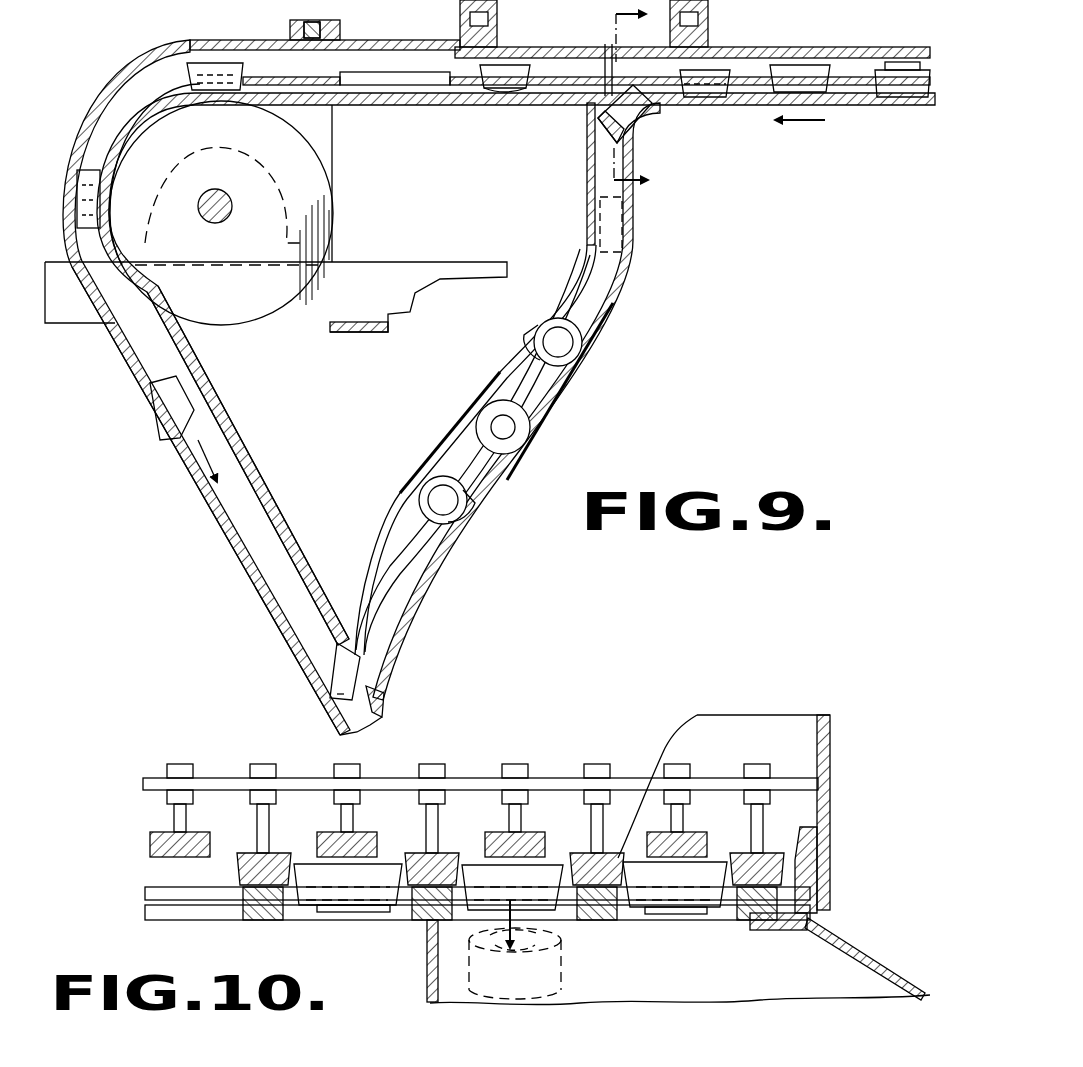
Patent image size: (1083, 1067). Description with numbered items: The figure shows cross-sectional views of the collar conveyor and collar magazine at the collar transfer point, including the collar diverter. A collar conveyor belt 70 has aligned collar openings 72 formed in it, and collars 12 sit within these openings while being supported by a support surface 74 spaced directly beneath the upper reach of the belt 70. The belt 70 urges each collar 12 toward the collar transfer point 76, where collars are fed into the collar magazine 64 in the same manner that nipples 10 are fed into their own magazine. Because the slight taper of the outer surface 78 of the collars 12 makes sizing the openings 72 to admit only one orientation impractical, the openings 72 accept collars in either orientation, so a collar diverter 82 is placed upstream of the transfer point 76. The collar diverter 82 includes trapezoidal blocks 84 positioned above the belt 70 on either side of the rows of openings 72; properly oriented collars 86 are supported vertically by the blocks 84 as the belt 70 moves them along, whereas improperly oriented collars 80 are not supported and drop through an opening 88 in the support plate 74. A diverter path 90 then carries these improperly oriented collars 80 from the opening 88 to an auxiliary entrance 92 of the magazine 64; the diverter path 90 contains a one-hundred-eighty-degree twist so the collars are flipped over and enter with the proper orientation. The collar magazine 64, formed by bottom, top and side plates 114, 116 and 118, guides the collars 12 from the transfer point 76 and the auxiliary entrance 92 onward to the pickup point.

In FIG. 9, the nipples 10 is at (645, 107).
In FIG. 10, the collars 12 is at (398, 850).
In FIG. 9, the collar magazine 64 is at (212, 516).
In FIG. 9, the collar conveyor belt 70 is at (847, 76).
In FIG. 9, the collar openings 72 is at (396, 76).
In FIG. 9, the support surface 74 is at (428, 100).
In FIG. 10, the support surface 74 is at (307, 922).
In FIG. 9, the collar transfer point 76 is at (76, 142).
In FIG. 9, the outer surface 78 is at (548, 64).
In FIG. 10, the outer surface 78 is at (415, 908).
In FIG. 9, the improperly oriented collars 80 is at (640, 116).
In FIG. 10, the improperly oriented collars 80 is at (547, 868).
In FIG. 9, the collar diverter 82 is at (708, 166).
In FIG. 10, the collar diverter 82 is at (877, 750).
In FIG. 9, the trapezoidal blocks 84 is at (740, 72).
In FIG. 10, the trapezoidal blocks 84 is at (466, 855).
In FIG. 9, the properly oriented collars 86 is at (197, 64).
In FIG. 10, the properly oriented collars 86 is at (714, 868).
In FIG. 9, the opening 88 is at (606, 62).
In FIG. 10, the opening 88 is at (756, 926).
In FIG. 9, the diverter path 90 is at (618, 306).
In FIG. 9, the auxiliary entrance 92 is at (356, 648).
In FIG. 9, the bottom plate 114 is at (252, 570).
In FIG. 9, the top plate 116 is at (290, 547).
In FIG. 9, the side plates 118 is at (264, 518).